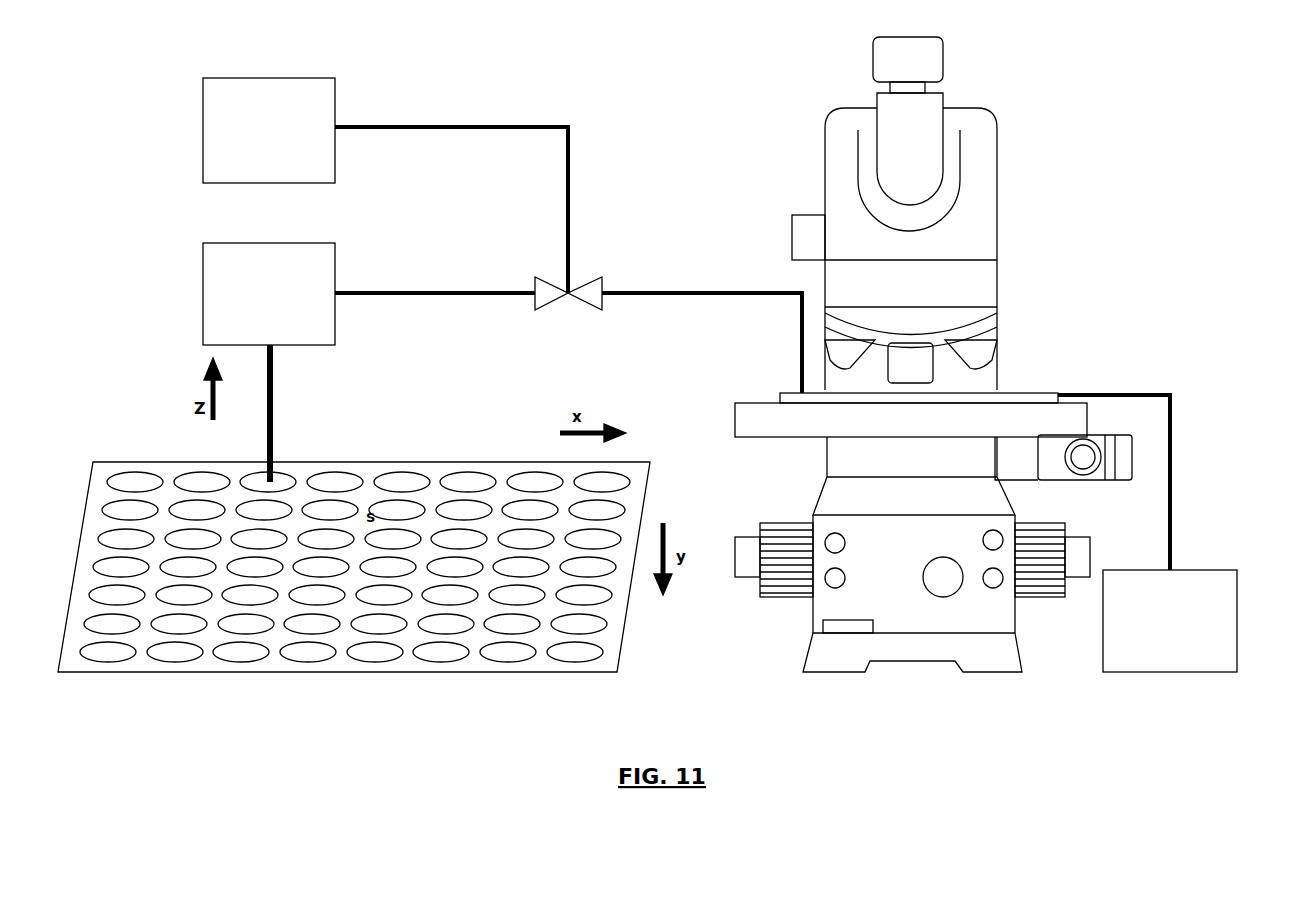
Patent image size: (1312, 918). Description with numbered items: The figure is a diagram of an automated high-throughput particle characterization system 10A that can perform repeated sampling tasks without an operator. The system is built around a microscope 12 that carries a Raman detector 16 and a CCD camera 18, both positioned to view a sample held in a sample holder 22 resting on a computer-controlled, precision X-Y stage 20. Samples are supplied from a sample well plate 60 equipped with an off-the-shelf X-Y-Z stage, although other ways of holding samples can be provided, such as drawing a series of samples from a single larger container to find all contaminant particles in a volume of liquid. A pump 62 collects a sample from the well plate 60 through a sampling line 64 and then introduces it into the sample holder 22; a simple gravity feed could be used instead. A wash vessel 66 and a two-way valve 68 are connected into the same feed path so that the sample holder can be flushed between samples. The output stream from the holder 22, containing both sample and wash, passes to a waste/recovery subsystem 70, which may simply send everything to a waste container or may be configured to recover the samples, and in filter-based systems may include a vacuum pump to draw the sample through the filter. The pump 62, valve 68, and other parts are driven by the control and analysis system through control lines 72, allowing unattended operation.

The automated high-throughput particle characterization system 10A is at (112, 700).
The microscope 12 is at (760, 603).
The Raman detector 16 is at (944, 60).
The CCD camera 18 is at (986, 126).
The X-Y stage 20 is at (735, 420).
The sample holder 22 is at (780, 394).
The multi-well sample tray 60 is at (384, 682).
The pump 62 is at (274, 420).
The pump 64 is at (336, 268).
The wash vessel 66 is at (336, 102).
The two-way valve 68 is at (602, 280).
The waste/recovery subsystem 70 is at (1238, 590).
The control lines 72 is at (272, 70).